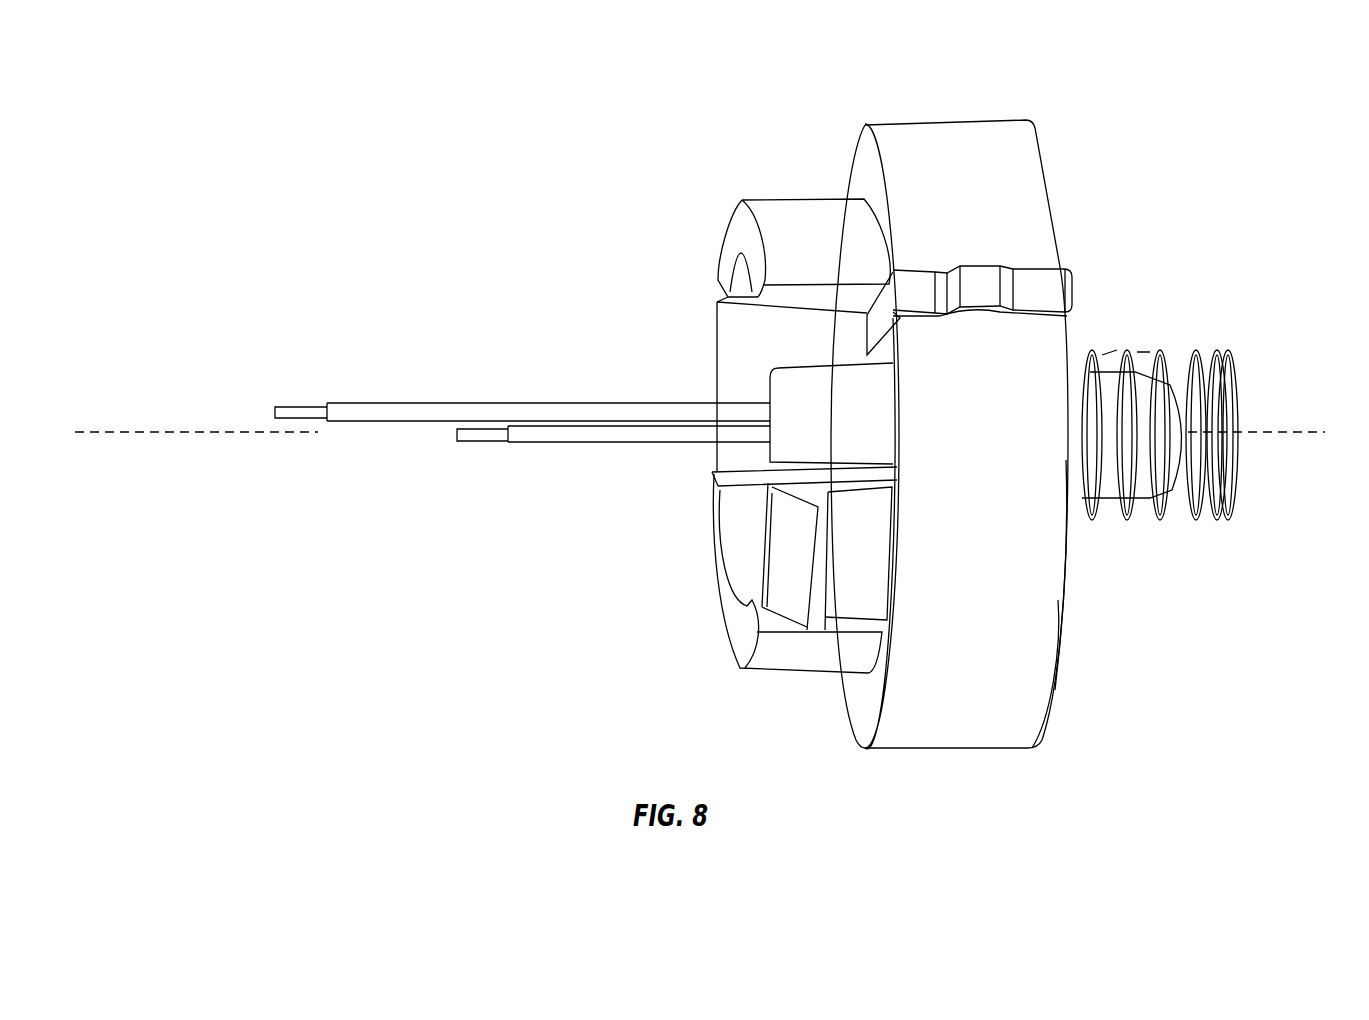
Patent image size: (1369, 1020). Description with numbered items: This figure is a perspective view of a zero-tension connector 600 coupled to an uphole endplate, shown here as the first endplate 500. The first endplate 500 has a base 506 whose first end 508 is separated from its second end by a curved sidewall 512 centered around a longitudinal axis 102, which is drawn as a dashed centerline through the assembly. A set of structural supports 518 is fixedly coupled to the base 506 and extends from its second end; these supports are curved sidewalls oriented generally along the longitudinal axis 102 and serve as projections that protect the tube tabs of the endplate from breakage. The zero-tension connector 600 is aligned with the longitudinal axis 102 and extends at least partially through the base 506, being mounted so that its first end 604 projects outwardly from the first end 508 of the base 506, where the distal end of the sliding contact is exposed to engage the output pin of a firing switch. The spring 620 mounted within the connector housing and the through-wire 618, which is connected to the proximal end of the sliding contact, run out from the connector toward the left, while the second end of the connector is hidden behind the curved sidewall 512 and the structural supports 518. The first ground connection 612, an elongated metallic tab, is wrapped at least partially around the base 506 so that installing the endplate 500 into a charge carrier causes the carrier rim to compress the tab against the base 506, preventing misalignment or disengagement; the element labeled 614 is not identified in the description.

The longitudinal axis 102 is at (122, 430).
The first endplate 500 is at (970, 88).
The base 506 is at (937, 758).
The first end 508 is at (1070, 646).
The curved sidewall 512 is at (1034, 705).
The set of structural supports 518 is at (740, 230).
The zero-tension connector 600 is at (1116, 316).
The first end 604 is at (1242, 376).
The first ground connection 612 is at (1035, 287).
The spring end 614 is at (1236, 505).
The through-wire 618 is at (548, 440).
The spring 620 is at (400, 405).